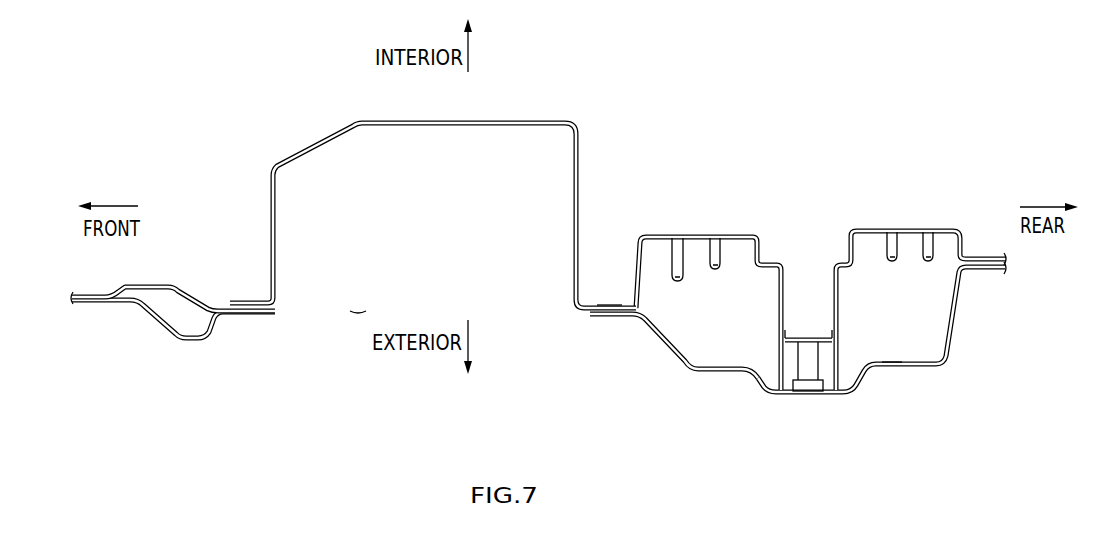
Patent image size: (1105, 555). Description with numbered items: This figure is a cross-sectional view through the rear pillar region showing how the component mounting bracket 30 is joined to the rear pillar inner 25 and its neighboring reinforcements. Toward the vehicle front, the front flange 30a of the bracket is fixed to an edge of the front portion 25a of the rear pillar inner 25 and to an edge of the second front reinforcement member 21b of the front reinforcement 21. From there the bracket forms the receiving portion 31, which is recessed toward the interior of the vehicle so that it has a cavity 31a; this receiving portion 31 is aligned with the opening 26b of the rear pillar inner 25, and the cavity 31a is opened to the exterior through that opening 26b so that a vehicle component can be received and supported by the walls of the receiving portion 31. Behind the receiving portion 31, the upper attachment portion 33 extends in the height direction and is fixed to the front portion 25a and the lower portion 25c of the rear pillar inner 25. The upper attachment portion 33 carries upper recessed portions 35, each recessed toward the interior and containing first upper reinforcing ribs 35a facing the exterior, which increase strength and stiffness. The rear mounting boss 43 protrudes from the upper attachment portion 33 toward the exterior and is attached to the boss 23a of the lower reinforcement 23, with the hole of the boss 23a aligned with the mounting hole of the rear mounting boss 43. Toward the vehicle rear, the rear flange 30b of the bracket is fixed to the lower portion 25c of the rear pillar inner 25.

The front reinforcement 21 is at (173, 338).
The second front reinforcement member 21b is at (184, 342).
The lower reinforcement 23 is at (798, 349).
The boss 23a is at (766, 395).
The rear pillar inner 25 is at (534, 277).
The front portion 25a is at (121, 286).
The lower portion 25c is at (892, 362).
The opening 26b is at (358, 313).
The component mounting bracket 30 is at (595, 171).
The front flange 30a is at (242, 300).
The rear flange 30b is at (987, 256).
The receiving portion 31 is at (578, 176).
The cavity 31a is at (456, 207).
The upper attachment portion 33 is at (815, 225).
The upper recessed portion 35 is at (698, 236).
The first upper reinforcing ribs 35a is at (716, 263).
The rear mounting boss 43 is at (782, 318).